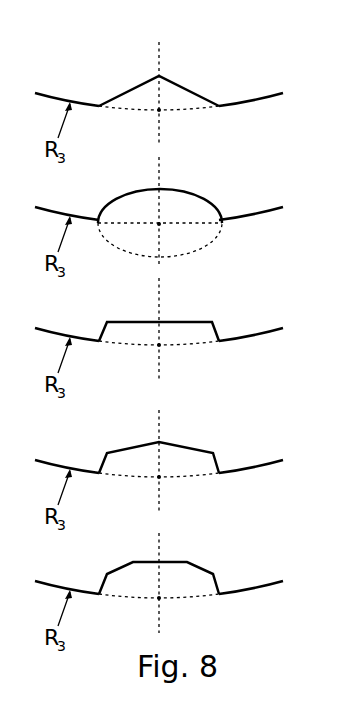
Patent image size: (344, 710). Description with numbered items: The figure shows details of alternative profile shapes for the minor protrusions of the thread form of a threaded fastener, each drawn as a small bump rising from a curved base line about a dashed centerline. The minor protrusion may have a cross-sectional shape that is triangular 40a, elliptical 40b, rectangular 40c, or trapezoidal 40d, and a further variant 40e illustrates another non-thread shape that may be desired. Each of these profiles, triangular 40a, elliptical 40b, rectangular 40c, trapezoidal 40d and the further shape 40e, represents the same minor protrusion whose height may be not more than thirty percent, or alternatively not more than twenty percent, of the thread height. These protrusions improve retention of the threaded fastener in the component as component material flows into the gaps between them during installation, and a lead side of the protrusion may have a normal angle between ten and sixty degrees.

The triangular minor protrusion 40a is at (186, 87).
The elliptical minor protrusion 40b is at (193, 192).
The rectangular minor protrusion 40c is at (217, 328).
The trapezoidal minor protrusion 40d is at (215, 453).
The minor protrusion of other non-thread shape 40e is at (217, 576).